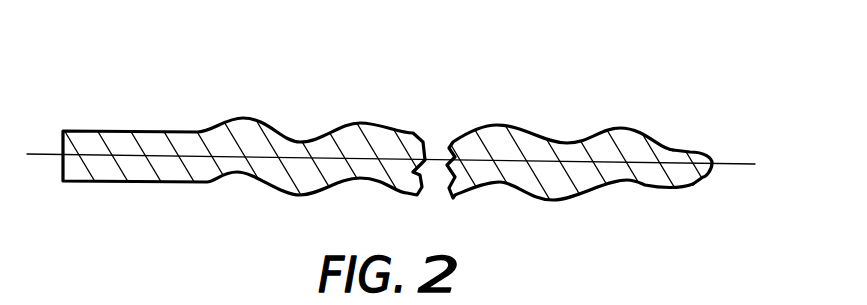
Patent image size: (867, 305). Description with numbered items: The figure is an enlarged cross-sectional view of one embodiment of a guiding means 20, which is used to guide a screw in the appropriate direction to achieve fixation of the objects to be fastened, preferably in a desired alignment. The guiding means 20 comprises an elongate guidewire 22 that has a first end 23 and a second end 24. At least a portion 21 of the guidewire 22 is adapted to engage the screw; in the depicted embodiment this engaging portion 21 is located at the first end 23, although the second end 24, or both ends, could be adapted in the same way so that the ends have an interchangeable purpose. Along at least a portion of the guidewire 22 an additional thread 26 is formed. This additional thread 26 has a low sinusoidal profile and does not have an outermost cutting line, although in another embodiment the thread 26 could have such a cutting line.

The guiding means 20 is at (389, 134).
The engaging portion 21 is at (245, 157).
The elongate guidewire 22 is at (594, 169).
The first end 23 is at (97, 135).
The second end 24 is at (688, 160).
The additional thread 26 is at (372, 124).